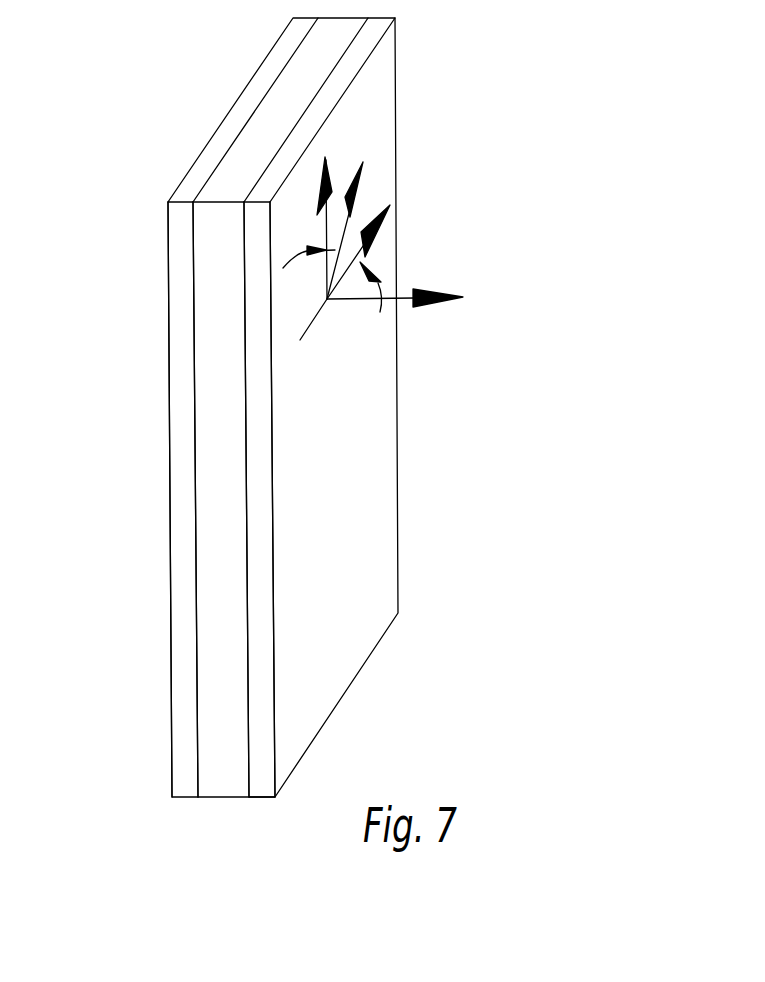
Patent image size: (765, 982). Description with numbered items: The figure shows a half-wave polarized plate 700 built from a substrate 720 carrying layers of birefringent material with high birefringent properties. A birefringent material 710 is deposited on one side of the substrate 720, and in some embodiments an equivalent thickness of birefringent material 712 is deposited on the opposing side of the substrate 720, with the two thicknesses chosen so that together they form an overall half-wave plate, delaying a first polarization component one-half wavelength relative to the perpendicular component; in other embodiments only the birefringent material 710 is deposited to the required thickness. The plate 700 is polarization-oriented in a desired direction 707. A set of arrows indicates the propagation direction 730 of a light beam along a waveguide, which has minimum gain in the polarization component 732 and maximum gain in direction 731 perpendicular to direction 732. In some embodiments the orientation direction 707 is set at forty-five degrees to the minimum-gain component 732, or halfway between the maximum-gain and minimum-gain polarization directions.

The half-wave polarized plate 700 is at (503, 98).
The polarization orientation direction 707 is at (355, 175).
The birefringent material 710 is at (182, 677).
The birefringent material 712 is at (268, 796).
The substrate 720 is at (223, 623).
The propagation direction 730 is at (433, 290).
The polarization direction of maximum gain 731 is at (322, 183).
The polarization component of minimum gain 732 is at (378, 218).